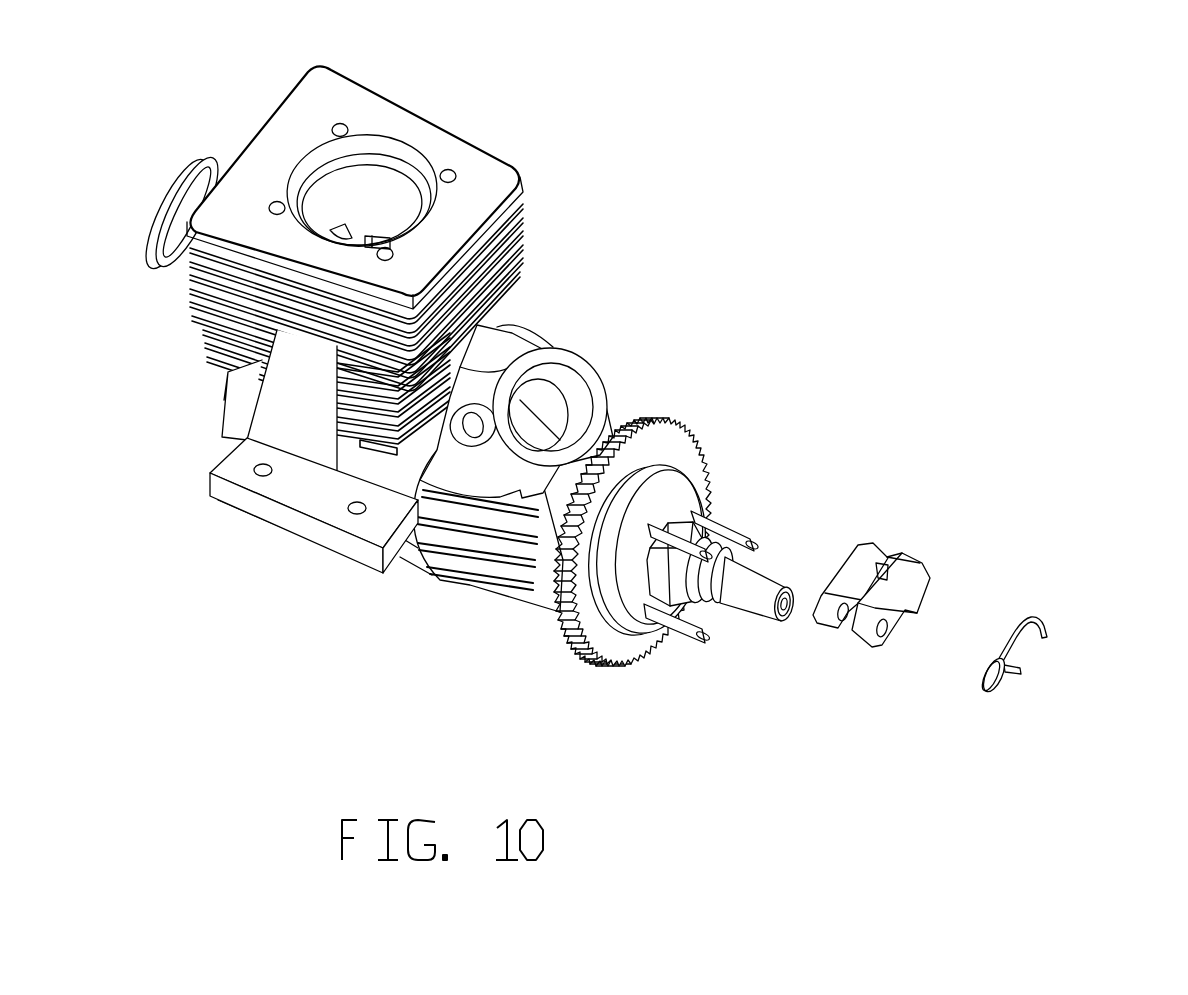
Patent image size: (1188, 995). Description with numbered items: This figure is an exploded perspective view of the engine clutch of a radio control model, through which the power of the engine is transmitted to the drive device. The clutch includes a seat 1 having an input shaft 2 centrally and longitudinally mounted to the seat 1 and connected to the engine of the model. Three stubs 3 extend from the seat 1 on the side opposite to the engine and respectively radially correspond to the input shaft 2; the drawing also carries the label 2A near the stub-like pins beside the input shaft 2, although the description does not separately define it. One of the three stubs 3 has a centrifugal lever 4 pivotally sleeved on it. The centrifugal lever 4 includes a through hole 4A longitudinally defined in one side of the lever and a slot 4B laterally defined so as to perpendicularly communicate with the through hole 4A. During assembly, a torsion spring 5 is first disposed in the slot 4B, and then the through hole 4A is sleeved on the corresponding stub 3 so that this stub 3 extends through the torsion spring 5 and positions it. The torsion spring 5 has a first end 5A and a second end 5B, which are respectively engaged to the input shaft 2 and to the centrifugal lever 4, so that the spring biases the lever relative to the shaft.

The seat 1 is at (687, 497).
The input shaft 2 is at (734, 607).
The drive pins 2A is at (707, 538).
The stubs 3 is at (693, 643).
The centrifugal lever 4 is at (909, 597).
The through hole 4A is at (885, 630).
The slot 4B is at (862, 592).
The torsion spring 5 is at (1079, 677).
The first end 5A is at (1048, 637).
The second end 5B is at (1023, 668).